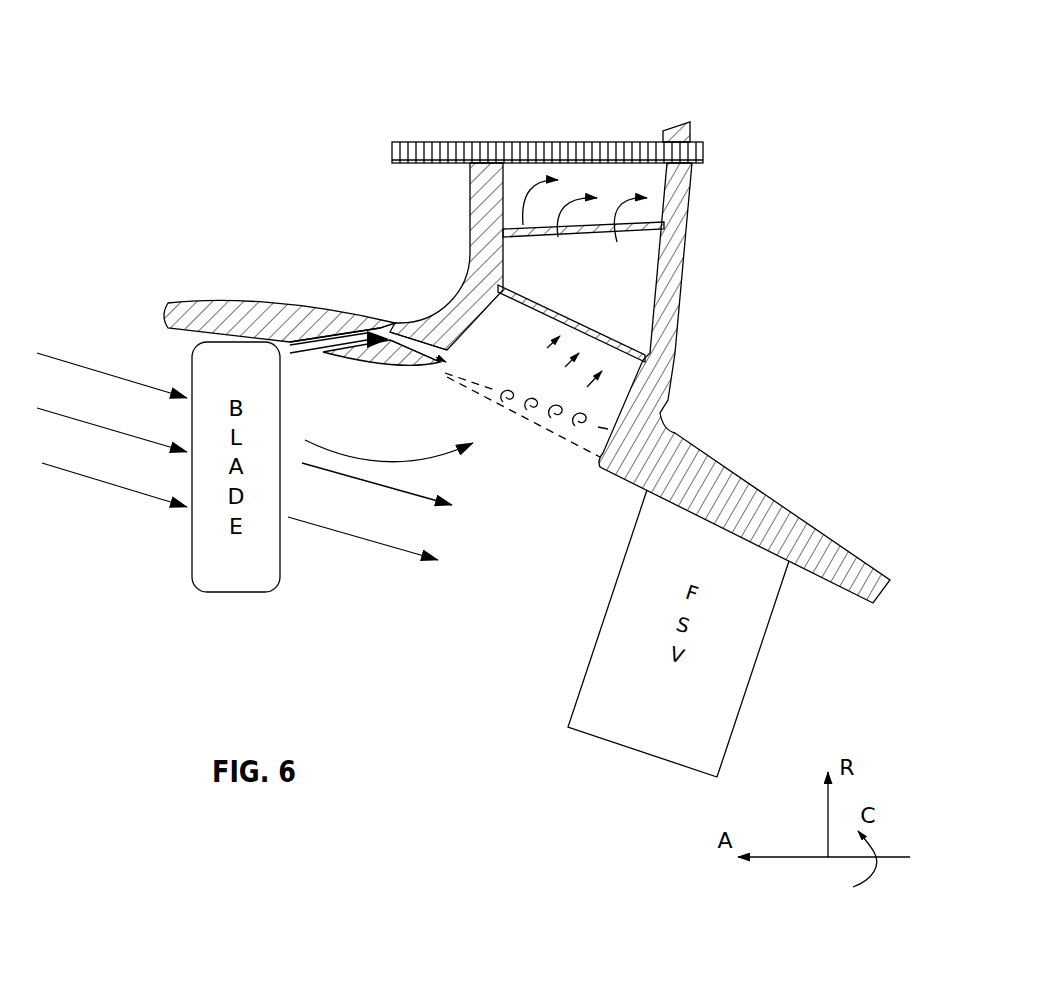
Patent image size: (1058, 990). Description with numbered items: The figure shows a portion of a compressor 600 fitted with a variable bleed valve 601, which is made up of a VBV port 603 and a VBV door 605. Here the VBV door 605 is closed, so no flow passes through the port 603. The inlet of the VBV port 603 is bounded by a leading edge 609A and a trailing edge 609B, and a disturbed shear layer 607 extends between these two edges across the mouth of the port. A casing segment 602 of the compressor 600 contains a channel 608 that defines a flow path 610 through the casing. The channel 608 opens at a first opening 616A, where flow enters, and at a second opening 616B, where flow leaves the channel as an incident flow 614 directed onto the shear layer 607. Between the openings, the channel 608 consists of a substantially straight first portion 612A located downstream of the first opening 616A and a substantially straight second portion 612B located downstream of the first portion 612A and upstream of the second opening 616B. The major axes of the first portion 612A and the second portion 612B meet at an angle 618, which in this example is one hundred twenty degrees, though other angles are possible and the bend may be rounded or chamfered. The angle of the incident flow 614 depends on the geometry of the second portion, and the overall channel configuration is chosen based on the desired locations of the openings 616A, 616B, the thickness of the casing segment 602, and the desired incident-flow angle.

The compressor 600 is at (150, 142).
The variable bleed valve 601 is at (765, 88).
The casing segment 602 is at (188, 303).
The VBV port 603 is at (717, 268).
The VBV door 605 is at (437, 142).
The disturbed shear layer 607 is at (540, 407).
The channel 608 is at (388, 348).
The leading edge of the VBV port 609A is at (435, 372).
The trailing edge of the VBV port 609B is at (602, 457).
The flow path 610 is at (415, 348).
The first portion 612A is at (323, 333).
The second portion 612B is at (418, 347).
The incident flow 614 is at (448, 362).
The first opening 616A is at (323, 355).
The second opening 616B is at (460, 352).
The angle 618 is at (383, 325).